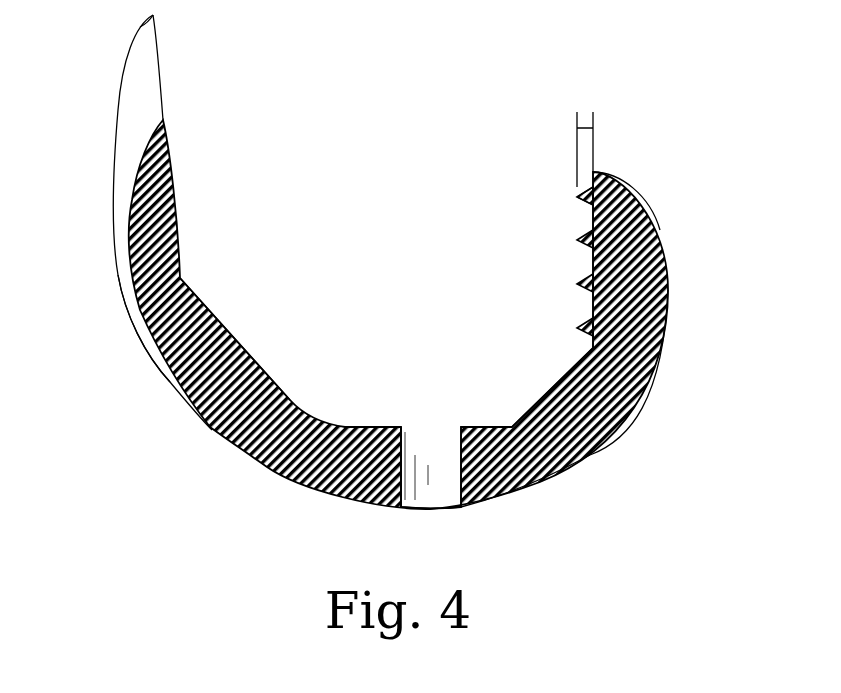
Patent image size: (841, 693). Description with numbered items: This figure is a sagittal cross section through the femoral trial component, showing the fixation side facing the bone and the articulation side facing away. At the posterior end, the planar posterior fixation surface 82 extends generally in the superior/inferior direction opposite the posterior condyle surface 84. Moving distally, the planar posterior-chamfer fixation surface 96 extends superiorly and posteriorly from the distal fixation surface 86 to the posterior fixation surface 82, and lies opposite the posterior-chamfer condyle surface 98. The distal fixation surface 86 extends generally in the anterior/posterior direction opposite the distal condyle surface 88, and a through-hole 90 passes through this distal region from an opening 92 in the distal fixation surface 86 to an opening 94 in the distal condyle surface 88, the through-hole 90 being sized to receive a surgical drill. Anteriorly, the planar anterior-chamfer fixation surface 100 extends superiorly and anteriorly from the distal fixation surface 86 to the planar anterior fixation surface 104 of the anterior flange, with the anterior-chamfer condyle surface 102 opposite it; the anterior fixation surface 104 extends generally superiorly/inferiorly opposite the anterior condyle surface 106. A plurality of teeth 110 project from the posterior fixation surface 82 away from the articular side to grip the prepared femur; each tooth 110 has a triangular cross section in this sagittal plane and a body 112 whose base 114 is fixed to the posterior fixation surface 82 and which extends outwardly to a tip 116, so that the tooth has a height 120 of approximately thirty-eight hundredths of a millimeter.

The posterior fixation surface 82 is at (591, 345).
The posterior condyle surface 84 is at (670, 285).
The distal fixation surface 86 is at (492, 427).
The distal condyle surface 88 is at (498, 505).
The through-hole 90 is at (410, 432).
The opening 92 is at (430, 428).
The opening 94 is at (430, 510).
The posterior-chamfer fixation surface 96 is at (545, 395).
The posterior-chamfer condyle surface 98 is at (588, 455).
The anterior-chamfer fixation surface 100 is at (204, 299).
The anterior-chamfer condyle surface 102 is at (143, 346).
The anterior fixation surface 104 is at (160, 50).
The anterior condyle surface 106 is at (126, 66).
The teeth 110 is at (556, 169).
The body 112 is at (582, 206).
The base 114 is at (620, 182).
The tip 116 is at (583, 197).
The height 120 is at (583, 125).